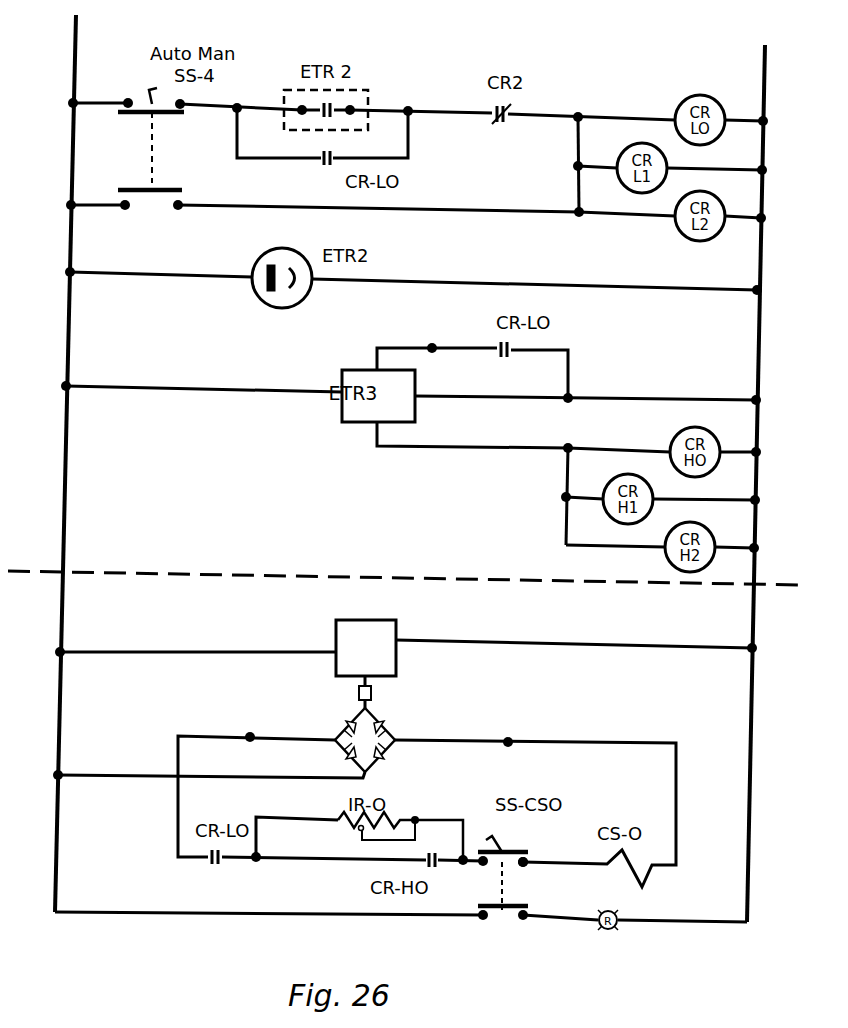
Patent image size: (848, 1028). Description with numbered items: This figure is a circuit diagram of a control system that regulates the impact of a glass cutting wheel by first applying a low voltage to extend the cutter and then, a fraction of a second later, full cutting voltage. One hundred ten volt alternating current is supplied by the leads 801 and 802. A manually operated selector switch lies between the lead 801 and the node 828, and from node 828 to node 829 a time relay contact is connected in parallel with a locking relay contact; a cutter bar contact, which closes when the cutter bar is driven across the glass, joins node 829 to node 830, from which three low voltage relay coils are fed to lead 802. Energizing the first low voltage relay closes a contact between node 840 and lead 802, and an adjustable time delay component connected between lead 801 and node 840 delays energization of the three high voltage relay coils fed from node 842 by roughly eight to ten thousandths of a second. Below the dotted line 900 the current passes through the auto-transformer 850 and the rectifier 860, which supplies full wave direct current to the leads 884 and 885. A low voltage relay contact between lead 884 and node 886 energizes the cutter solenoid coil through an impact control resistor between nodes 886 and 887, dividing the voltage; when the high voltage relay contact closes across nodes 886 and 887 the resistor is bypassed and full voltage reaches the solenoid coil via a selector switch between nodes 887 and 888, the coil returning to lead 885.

The lead 801 is at (78, 50).
The lead 802 is at (762, 62).
The circuit node 828 is at (238, 105).
The circuit node 829 is at (409, 106).
The circuit node 830 is at (580, 112).
The circuit node 840 is at (448, 336).
The circuit node 842 is at (569, 448).
The auto-transformer 850 is at (397, 630).
The rectifier 860 is at (383, 727).
The direct current lead 884 is at (252, 732).
The direct current lead 885 is at (509, 737).
The circuit node 886 is at (254, 862).
The circuit node 887 is at (463, 866).
The circuit node 888 is at (526, 868).
The dotted line 900 is at (32, 570).